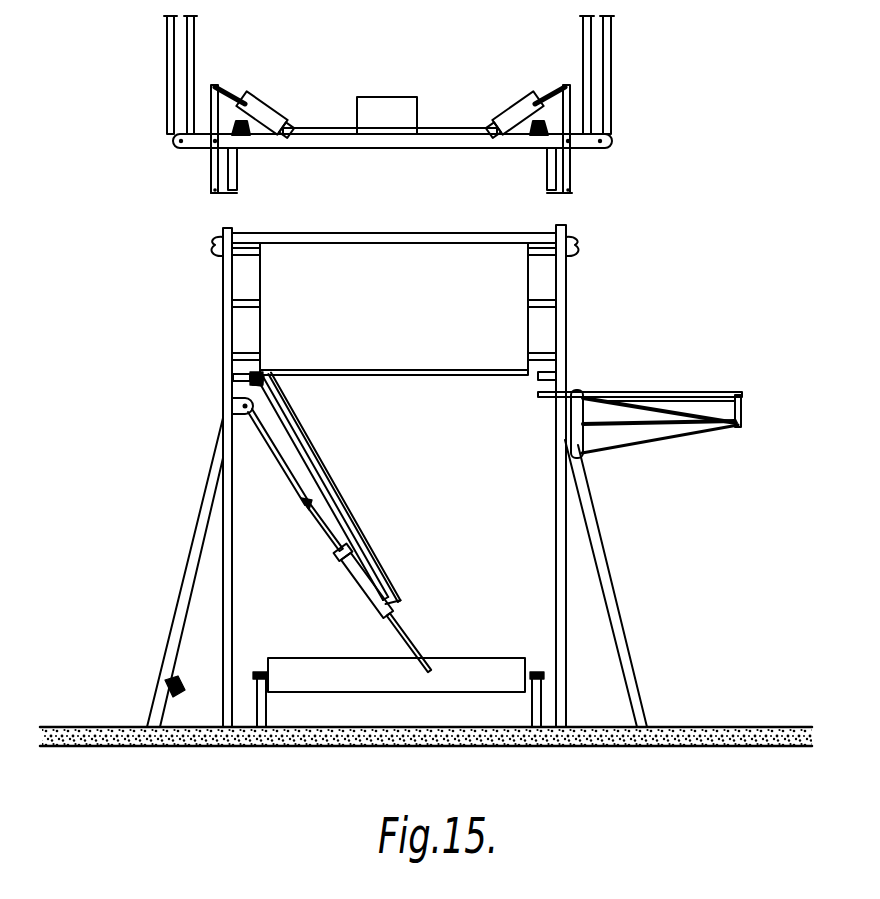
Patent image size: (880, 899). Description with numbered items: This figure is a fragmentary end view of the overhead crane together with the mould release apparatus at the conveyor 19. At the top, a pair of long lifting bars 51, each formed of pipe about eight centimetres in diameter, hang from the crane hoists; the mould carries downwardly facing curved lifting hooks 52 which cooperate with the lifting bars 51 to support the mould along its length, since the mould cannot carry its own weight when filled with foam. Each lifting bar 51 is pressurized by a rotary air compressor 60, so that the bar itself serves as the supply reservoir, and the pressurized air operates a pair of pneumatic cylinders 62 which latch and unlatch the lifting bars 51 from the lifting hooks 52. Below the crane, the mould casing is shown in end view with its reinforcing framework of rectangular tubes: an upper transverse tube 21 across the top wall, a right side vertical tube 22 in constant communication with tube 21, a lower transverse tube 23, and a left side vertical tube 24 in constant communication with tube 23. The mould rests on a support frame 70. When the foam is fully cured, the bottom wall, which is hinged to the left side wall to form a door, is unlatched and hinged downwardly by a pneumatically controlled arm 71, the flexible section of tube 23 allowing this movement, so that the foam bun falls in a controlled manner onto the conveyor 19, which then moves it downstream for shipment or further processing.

The conveyor 19 is at (502, 662).
The upper transverse tube 21 is at (417, 236).
The right side vertical tube 22 is at (564, 308).
The lower transverse tube 23 is at (318, 478).
The left side vertical tube 24 is at (226, 304).
The lifting bar 51 is at (214, 191).
The lifting hook 52 is at (212, 246).
The rotary air compressor 60 is at (402, 100).
The pneumatic cylinder 62 is at (272, 104).
The support frame 70 is at (221, 419).
The pneumatically controlled arm 71 is at (357, 568).